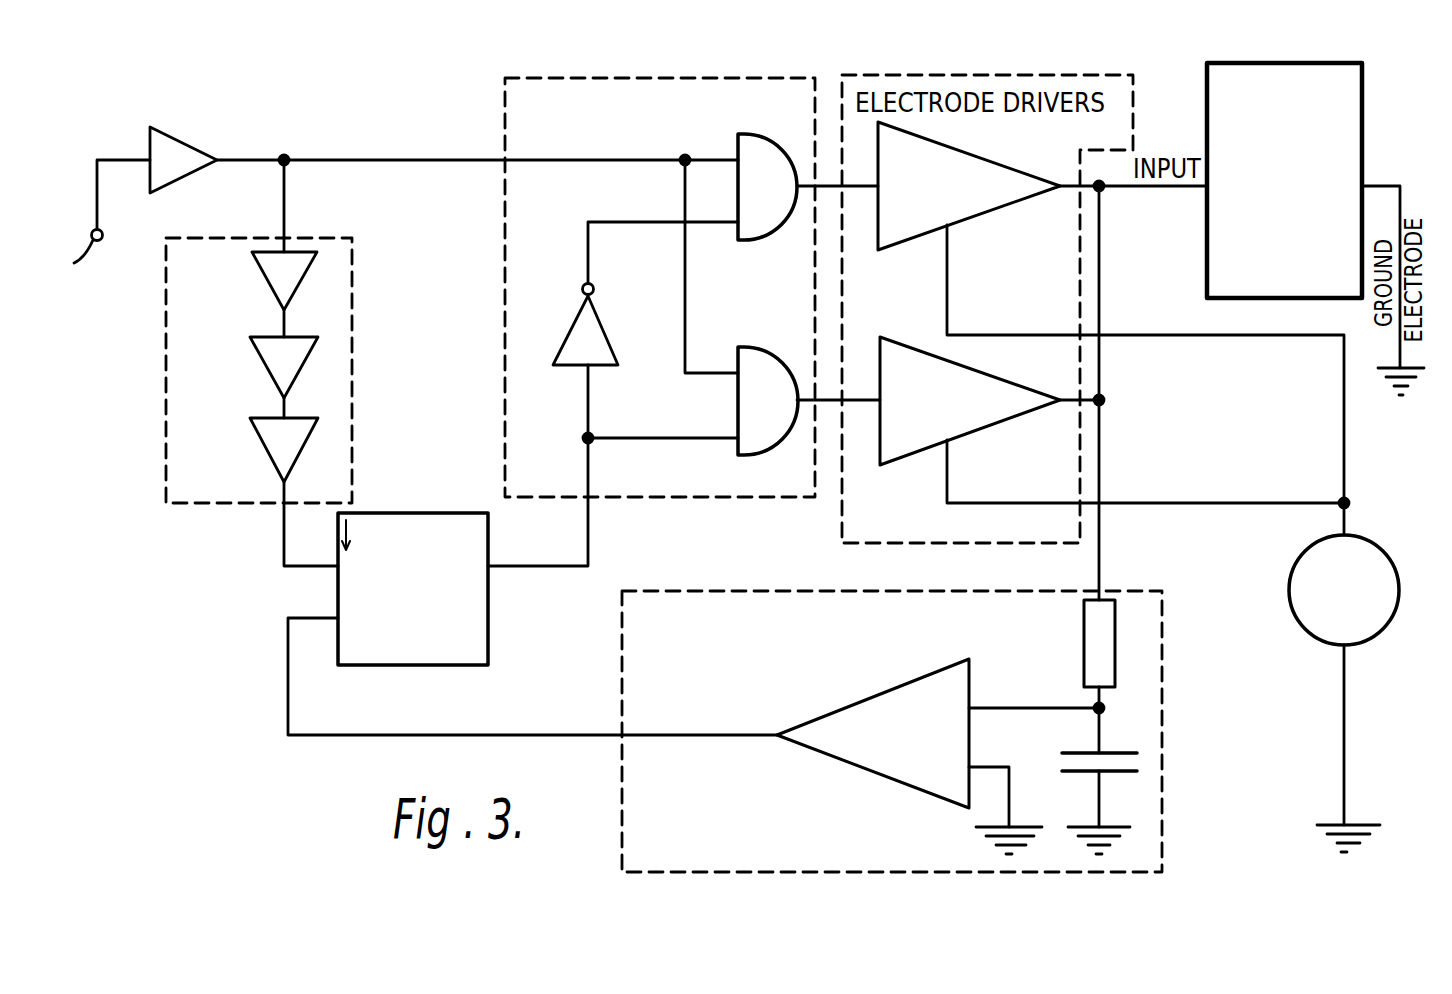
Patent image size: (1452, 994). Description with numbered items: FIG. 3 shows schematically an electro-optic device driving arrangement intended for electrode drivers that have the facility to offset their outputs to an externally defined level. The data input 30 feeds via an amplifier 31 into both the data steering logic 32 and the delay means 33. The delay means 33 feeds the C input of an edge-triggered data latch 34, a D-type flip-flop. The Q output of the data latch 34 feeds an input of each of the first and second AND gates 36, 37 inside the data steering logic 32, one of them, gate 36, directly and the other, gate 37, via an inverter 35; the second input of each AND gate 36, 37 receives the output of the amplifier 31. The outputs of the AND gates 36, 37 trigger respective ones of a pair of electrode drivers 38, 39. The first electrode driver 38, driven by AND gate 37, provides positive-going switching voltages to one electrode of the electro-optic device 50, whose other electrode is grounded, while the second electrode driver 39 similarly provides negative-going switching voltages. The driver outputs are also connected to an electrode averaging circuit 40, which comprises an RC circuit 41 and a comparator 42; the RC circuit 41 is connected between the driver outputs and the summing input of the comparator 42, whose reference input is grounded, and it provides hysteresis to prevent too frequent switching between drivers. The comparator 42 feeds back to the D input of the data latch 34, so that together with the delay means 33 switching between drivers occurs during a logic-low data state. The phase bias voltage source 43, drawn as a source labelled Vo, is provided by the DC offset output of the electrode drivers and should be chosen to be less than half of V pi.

The data input 30 is at (103, 229).
The amplifier 31 is at (175, 148).
The data steering logic 32 is at (632, 78).
The delay means 33 is at (328, 298).
The edge-triggered data latch 34 is at (446, 518).
The inverter 35 is at (572, 345).
The first AND gate 36 is at (745, 445).
The second AND gate 37 is at (770, 160).
The first electrode driver 38 is at (905, 232).
The second electrode driver 39 is at (1018, 390).
The electrode averaging circuit 40 is at (995, 585).
The RC circuit 41 is at (1105, 716).
The comparator 42 is at (860, 755).
The phase bias source 43 is at (1300, 608).
The electro-optic device 50 is at (1343, 100).